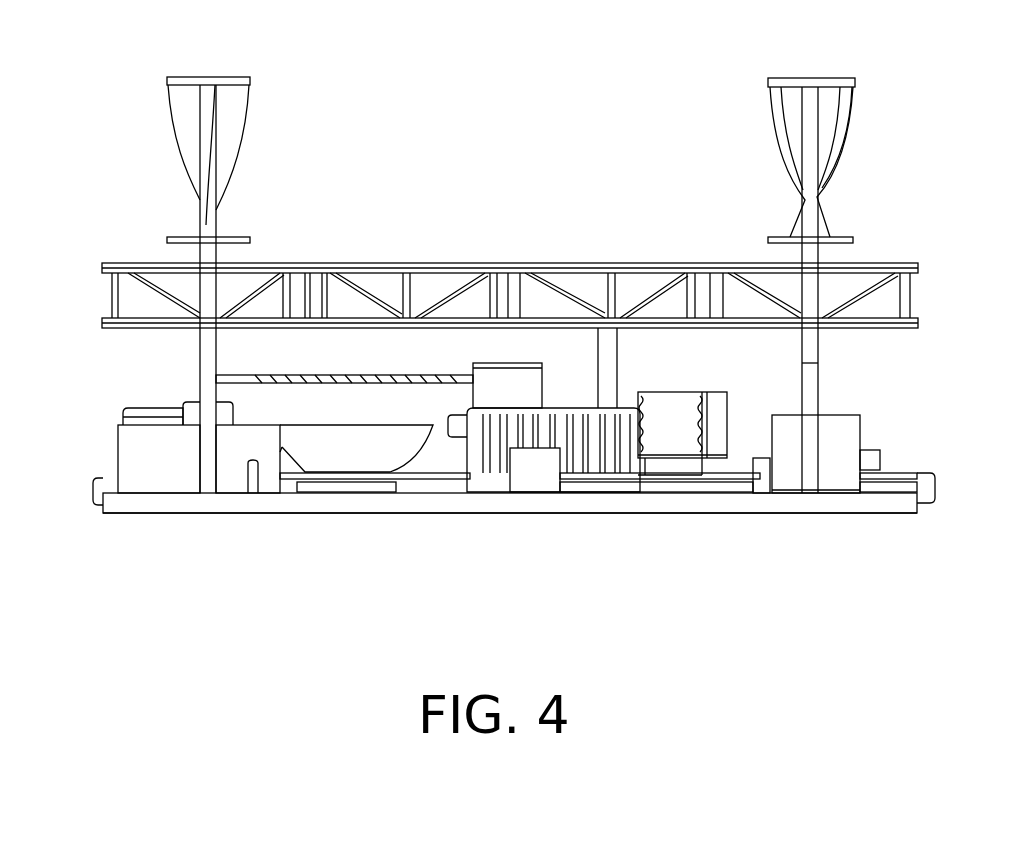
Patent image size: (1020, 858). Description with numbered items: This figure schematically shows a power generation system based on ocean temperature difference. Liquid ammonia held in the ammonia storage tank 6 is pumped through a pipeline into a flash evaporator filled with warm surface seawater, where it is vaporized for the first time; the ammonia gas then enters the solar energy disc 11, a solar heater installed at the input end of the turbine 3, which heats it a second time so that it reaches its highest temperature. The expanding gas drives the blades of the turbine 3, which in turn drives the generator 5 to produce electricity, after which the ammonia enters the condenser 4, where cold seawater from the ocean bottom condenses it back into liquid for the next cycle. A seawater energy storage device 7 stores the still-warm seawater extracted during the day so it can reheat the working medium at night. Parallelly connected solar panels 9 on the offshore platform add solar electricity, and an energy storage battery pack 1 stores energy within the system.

The energy storage battery pack 1 is at (492, 497).
The turbine 3 is at (512, 392).
The condenser 4 is at (832, 470).
The generator 5 is at (670, 435).
The ammonia storage tank 6 is at (533, 460).
The seawater energy storage device 7 is at (152, 470).
The solar panel 9 is at (102, 265).
The solar energy disc 11 is at (353, 455).